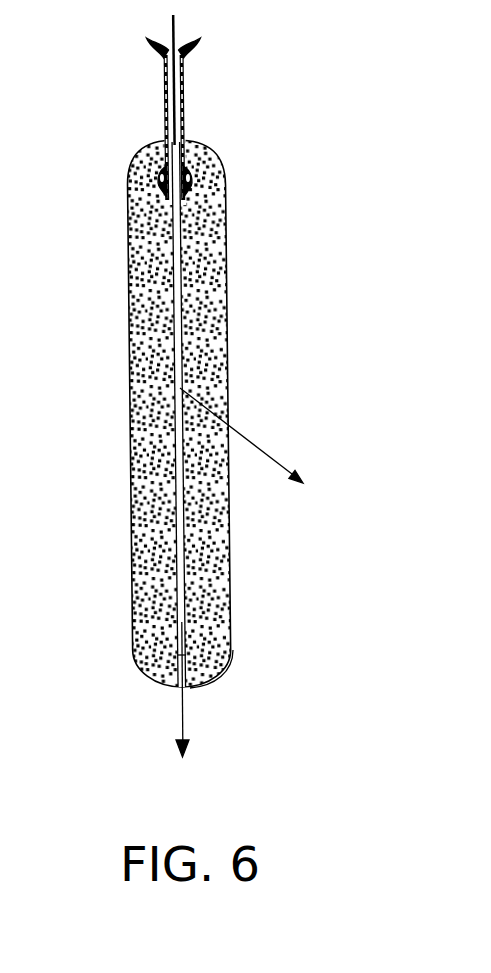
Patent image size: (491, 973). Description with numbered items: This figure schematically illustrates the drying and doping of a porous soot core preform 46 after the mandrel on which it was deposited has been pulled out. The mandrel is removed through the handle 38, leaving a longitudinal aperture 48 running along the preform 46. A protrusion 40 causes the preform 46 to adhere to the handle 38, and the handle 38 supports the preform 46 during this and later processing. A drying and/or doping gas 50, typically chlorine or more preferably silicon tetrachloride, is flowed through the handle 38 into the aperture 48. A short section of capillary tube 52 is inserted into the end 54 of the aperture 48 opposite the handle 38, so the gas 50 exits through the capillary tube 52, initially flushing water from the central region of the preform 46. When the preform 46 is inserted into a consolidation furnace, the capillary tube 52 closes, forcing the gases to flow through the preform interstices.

The handle 38 is at (183, 95).
The protrusion 40 is at (187, 182).
The porous soot core preform 46 is at (118, 303).
The longitudinal aperture 48 is at (180, 523).
The drying and/or doping gas 50 is at (268, 453).
The capillary tube 52 is at (178, 686).
The end of the porous preform aperture 54 is at (233, 657).